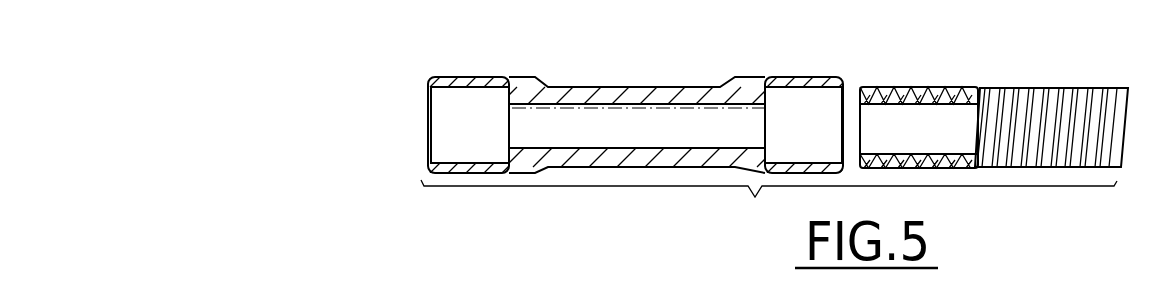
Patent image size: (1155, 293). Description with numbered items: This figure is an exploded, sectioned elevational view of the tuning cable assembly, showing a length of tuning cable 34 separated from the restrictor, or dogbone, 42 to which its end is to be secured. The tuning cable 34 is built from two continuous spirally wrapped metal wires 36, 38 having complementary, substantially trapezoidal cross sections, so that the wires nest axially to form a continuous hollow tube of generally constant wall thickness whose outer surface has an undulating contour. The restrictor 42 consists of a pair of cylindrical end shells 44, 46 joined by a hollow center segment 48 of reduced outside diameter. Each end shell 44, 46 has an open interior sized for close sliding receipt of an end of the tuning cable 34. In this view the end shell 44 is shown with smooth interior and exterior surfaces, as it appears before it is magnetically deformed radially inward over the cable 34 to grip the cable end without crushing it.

The tuning cable 34 is at (1050, 89).
The wire 36 is at (914, 88).
The wire 38 is at (931, 90).
The restrictor 42 is at (690, 56).
The end shell 44 is at (799, 78).
The end shell 46 is at (464, 78).
The hollow center segment 48 is at (606, 87).